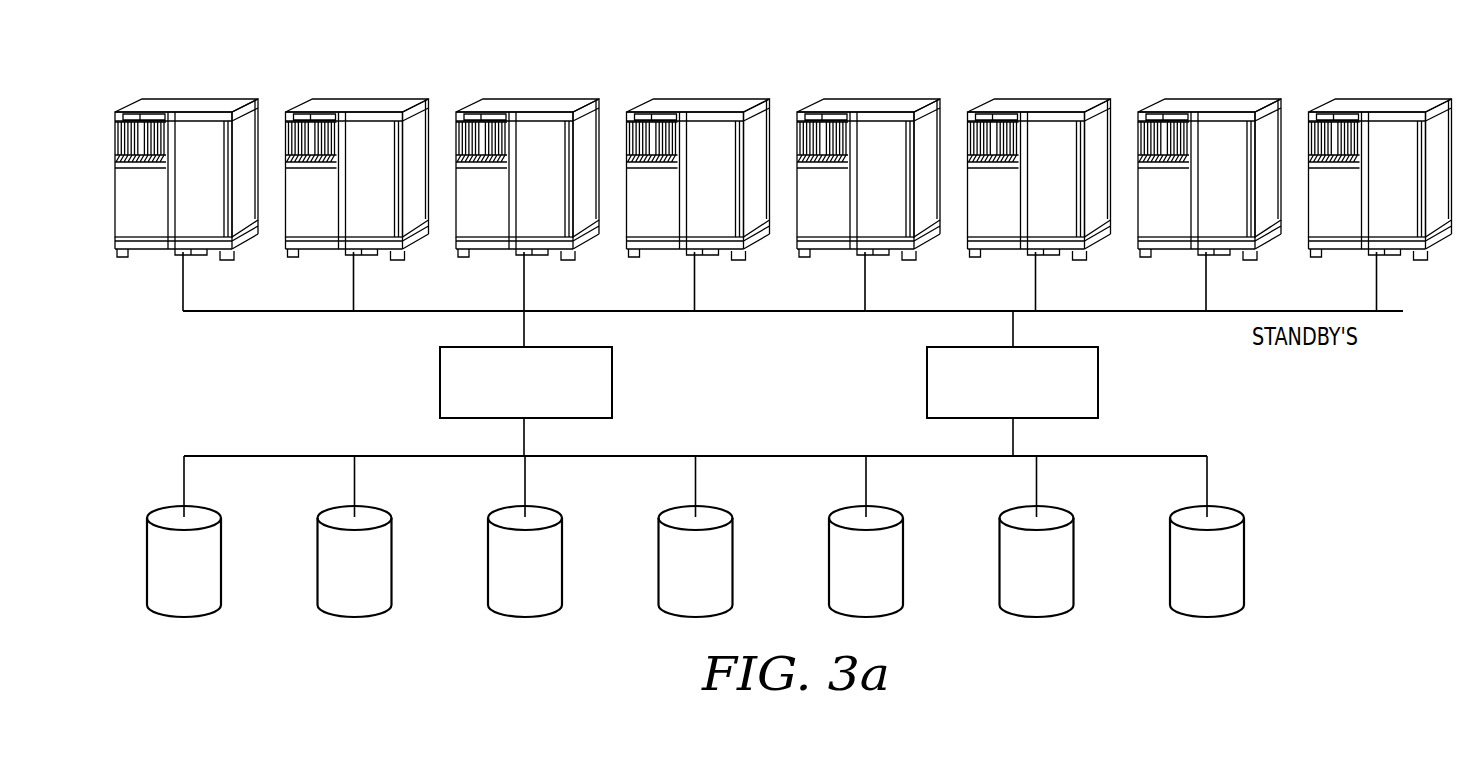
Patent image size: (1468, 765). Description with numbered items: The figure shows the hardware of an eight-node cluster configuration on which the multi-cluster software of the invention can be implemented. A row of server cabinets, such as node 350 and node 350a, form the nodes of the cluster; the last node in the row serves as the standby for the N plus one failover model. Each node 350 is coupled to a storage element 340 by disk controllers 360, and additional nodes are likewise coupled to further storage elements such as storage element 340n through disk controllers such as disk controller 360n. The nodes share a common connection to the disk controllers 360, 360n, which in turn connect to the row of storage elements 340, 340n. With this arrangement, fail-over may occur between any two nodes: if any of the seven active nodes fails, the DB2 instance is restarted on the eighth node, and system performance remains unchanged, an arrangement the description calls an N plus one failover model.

The node 350 is at (188, 103).
The node 350a is at (362, 103).
The disk controller 360 is at (440, 382).
The disk controller 360n is at (927, 382).
The storage element 340 is at (185, 616).
The storage element 340n is at (1208, 616).